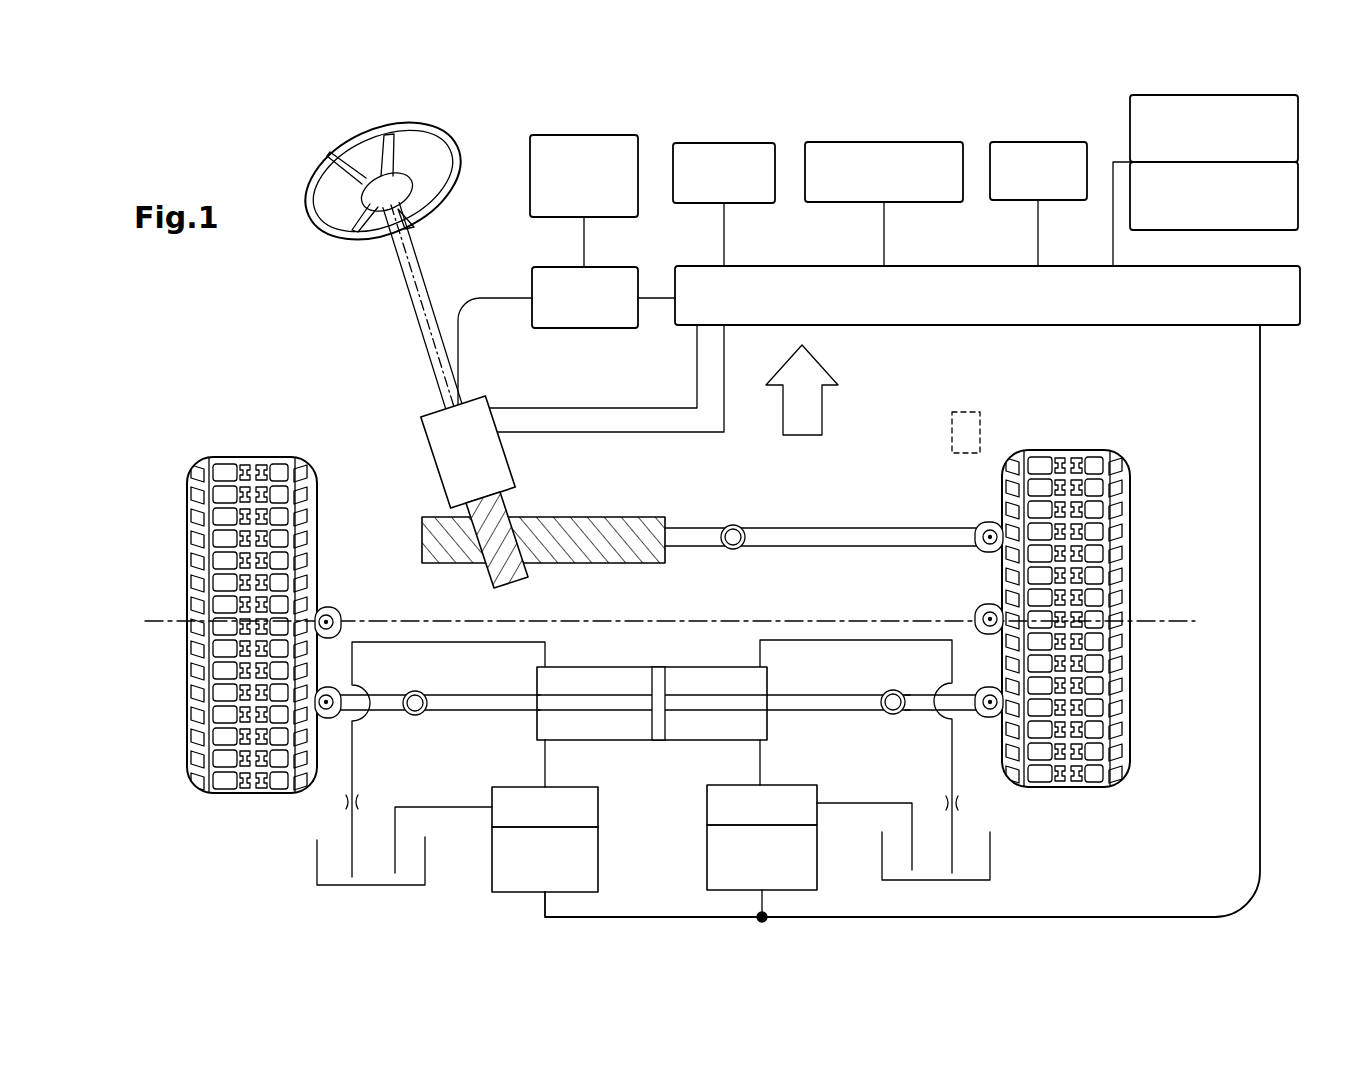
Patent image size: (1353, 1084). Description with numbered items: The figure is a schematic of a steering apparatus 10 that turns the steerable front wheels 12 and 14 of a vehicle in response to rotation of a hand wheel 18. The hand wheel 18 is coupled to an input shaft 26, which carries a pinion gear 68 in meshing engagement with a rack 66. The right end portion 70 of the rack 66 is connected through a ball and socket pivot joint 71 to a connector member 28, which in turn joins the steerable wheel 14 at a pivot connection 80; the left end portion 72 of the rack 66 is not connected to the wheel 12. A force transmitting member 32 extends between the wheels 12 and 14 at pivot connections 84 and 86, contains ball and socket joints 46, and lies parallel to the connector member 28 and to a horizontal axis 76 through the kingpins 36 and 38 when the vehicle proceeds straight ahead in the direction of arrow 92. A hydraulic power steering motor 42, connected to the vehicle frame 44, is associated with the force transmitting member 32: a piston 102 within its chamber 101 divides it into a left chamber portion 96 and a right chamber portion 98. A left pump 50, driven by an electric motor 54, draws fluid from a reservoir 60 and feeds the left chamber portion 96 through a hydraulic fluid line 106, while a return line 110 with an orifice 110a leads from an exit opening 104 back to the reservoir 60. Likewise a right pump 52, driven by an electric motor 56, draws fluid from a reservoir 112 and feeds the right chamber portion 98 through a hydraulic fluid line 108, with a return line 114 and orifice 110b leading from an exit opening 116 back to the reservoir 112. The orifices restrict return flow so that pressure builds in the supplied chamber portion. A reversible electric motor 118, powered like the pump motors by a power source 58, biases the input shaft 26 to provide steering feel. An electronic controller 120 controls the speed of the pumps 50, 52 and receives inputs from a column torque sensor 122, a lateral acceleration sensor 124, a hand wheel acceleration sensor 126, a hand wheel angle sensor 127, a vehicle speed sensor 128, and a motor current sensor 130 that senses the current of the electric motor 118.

The apparatus 10 is at (280, 143).
The steerable front wheel 12 is at (240, 458).
The steerable front wheel 14 is at (1105, 472).
The hand wheel 18 is at (443, 150).
The input shaft 26 is at (420, 316).
The connector member 28 is at (826, 522).
The force transmitting member 32 is at (960, 713).
The pivot connection 36 is at (334, 614).
The pivot connection 38 is at (985, 612).
The hydraulic power steering motor 42 is at (688, 662).
The frame 44 is at (982, 433).
The ball and socket joints 46 is at (423, 712).
The left pump 50 is at (590, 809).
The right pump 52 is at (708, 797).
The electric motor 54 is at (590, 872).
The electric motor 56 is at (805, 870).
The power source 58 is at (760, 150).
The fluid reservoir 60 is at (318, 861).
The rack 66 is at (535, 541).
The pinion gear 68 is at (500, 548).
The right end portion 70 is at (637, 535).
The ball and socket pivot joint 71 is at (733, 524).
The left end portion 72 is at (535, 515).
The horizontal axis 76 is at (1163, 605).
The pivot connection 80 is at (985, 531).
The pivot connection 84 is at (988, 696).
The pivot connection 86 is at (327, 697).
The arrow 92 is at (816, 411).
The left chamber portion 96 is at (553, 681).
The right chamber portion 98 is at (755, 723).
The chamber 101 is at (770, 680).
The piston 102 is at (660, 682).
The exit opening 104 is at (546, 667).
The hydraulic fluid line 106 is at (545, 762).
The hydraulic fluid line 108 is at (762, 766).
The return line 110 is at (450, 641).
The orifice 110a is at (362, 800).
The orifice 110b is at (962, 806).
The fluid reservoir 112 is at (1004, 862).
The return line 114 is at (860, 640).
The exit opening 116 is at (748, 662).
The electric motor 118 is at (541, 330).
The electronic controller 120 is at (1070, 308).
The column torque sensor 122 is at (460, 452).
The lateral acceleration sensor 124 is at (944, 150).
The hand wheel acceleration sensor 126 is at (1130, 115).
The hand wheel angle sensor 127 is at (1256, 215).
The vehicle speed sensor 128 is at (1017, 145).
The motor current sensor 130 is at (629, 151).